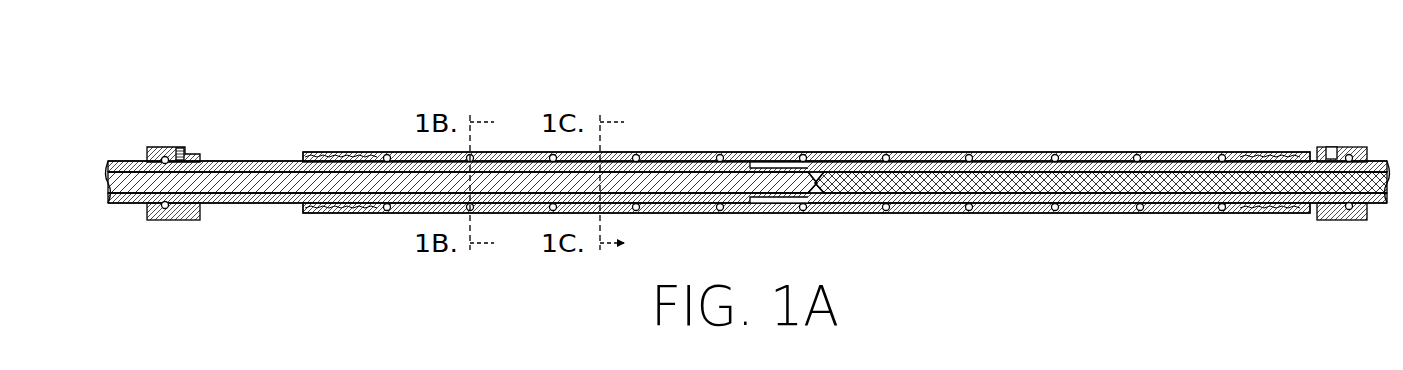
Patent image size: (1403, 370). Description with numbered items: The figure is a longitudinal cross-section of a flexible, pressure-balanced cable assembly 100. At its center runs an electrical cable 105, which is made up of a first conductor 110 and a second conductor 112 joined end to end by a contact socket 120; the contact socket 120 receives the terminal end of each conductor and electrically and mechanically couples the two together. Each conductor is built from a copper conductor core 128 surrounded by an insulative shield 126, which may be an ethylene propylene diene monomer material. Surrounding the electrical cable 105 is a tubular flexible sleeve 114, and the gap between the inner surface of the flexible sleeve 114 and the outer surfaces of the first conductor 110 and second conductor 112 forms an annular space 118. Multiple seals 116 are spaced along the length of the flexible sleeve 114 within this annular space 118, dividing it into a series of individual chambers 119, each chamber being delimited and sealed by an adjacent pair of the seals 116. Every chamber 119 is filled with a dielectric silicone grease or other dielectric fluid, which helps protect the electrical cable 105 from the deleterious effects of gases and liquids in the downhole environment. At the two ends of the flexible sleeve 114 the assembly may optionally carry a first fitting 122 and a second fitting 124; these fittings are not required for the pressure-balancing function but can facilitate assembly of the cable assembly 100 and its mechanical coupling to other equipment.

The cable assembly 100 is at (222, 78).
The electrical cable 105 is at (920, 150).
The first conductor 110 is at (688, 158).
The second conductor 112 is at (1025, 157).
The flexible sleeve 114 is at (930, 152).
The seals 116 is at (1222, 156).
The annular space 118 is at (1238, 158).
The individual chambers 119 is at (1222, 209).
The contact socket 120 is at (815, 195).
The first fitting 122 is at (370, 232).
The second fitting 124 is at (1370, 232).
The insulative shield 126 is at (522, 201).
The copper conductor core 128 is at (530, 163).